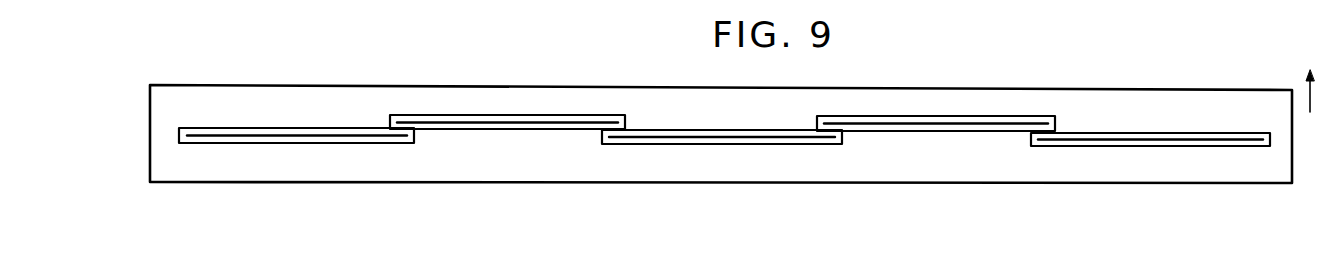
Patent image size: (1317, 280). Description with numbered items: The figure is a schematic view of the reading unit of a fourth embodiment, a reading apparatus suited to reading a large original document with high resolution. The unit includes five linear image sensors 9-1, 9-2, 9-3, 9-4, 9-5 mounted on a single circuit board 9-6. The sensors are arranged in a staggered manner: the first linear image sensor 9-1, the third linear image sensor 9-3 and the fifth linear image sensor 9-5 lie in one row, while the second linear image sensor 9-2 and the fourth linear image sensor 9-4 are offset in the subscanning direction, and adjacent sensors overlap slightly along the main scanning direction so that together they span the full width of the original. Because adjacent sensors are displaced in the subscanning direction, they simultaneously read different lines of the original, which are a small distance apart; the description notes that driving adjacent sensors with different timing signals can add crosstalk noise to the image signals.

The linear image sensor 9-1 is at (246, 143).
The linear image sensor 9-2 is at (543, 130).
The linear image sensor 9-3 is at (730, 144).
The linear image sensor 9-4 is at (942, 131).
The linear image sensor 9-5 is at (1135, 146).
The circuit board 9-6 is at (1235, 105).